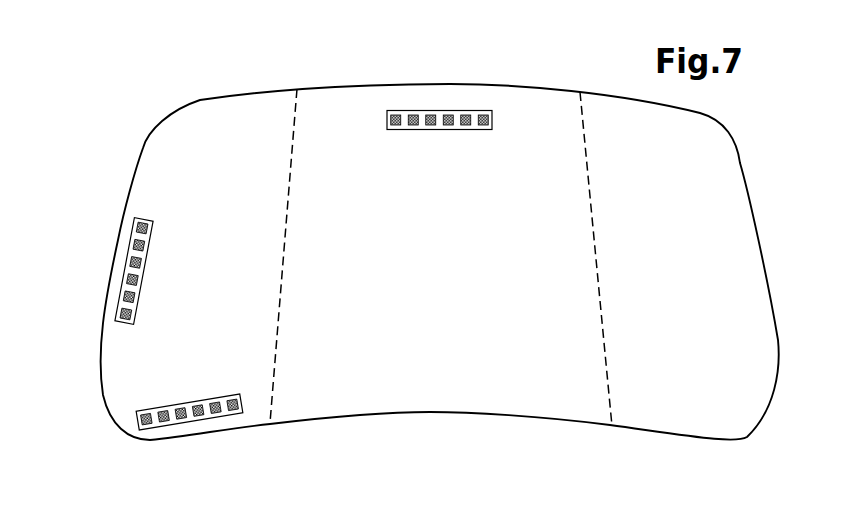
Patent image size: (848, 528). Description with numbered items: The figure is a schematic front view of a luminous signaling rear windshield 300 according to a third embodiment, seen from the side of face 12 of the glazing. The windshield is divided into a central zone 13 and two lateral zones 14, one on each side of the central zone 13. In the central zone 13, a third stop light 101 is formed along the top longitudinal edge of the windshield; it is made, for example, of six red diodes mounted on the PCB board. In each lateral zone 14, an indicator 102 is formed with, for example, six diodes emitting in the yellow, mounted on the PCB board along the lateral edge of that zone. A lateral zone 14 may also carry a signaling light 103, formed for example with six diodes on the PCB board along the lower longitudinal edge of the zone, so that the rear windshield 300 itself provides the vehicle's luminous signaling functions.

The luminous signaling rear windshield 300 is at (440, 232).
The face 12 is at (385, 312).
The central zone 13 is at (440, 291).
The lateral zone 14 is at (440, 474).
The third stop light 101 is at (405, 110).
The indicator 102 is at (122, 280).
The signaling light 103 is at (185, 404).